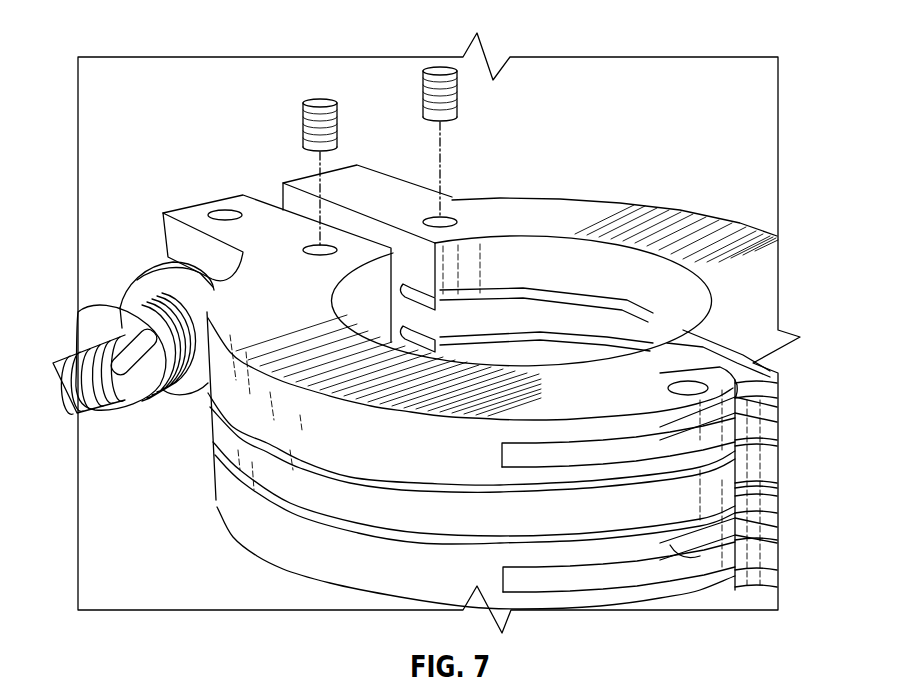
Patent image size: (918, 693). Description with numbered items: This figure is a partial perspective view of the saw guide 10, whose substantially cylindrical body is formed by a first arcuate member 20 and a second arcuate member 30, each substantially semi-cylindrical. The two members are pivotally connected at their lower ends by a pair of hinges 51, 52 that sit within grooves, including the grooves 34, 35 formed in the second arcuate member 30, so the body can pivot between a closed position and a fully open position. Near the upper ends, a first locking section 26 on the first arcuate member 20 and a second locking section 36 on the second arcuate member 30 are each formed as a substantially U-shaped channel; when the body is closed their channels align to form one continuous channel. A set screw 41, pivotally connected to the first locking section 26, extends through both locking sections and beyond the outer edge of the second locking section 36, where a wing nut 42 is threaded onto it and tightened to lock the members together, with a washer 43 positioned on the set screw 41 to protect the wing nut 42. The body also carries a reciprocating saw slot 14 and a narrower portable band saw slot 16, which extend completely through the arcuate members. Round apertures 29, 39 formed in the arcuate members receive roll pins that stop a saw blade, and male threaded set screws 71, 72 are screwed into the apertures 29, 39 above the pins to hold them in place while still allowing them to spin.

The saw guide 10 is at (60, 140).
The reciprocating saw slot 14 is at (500, 288).
The portable band saw slot 16 is at (617, 340).
The first arcuate member 20 is at (567, 217).
The first locking section 26 is at (167, 233).
The round aperture 29 is at (452, 218).
The second arcuate member 30 is at (337, 547).
The groove 34 is at (600, 453).
The groove 35 is at (623, 577).
The second locking section 36 is at (382, 186).
The round aperture 39 is at (320, 248).
The set screw 41 is at (83, 350).
The wing nut 42 is at (97, 320).
The washer 43 is at (147, 267).
The hinge 51 is at (750, 403).
The hinge 52 is at (755, 529).
The set screw 71 is at (428, 70).
The set screw 72 is at (304, 101).